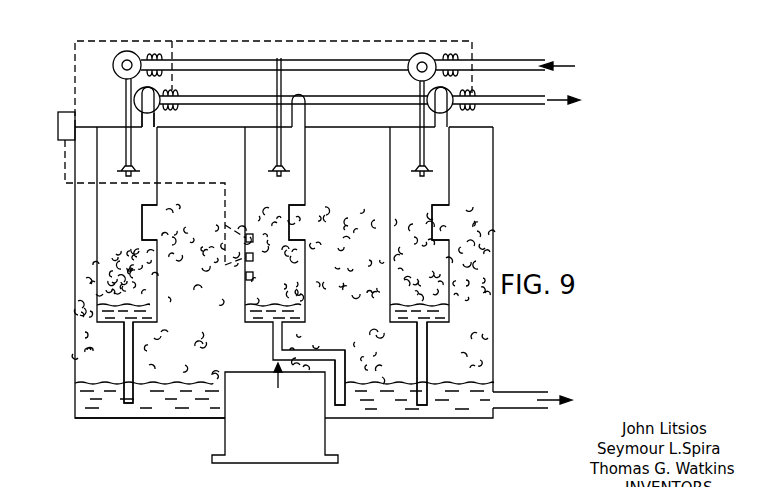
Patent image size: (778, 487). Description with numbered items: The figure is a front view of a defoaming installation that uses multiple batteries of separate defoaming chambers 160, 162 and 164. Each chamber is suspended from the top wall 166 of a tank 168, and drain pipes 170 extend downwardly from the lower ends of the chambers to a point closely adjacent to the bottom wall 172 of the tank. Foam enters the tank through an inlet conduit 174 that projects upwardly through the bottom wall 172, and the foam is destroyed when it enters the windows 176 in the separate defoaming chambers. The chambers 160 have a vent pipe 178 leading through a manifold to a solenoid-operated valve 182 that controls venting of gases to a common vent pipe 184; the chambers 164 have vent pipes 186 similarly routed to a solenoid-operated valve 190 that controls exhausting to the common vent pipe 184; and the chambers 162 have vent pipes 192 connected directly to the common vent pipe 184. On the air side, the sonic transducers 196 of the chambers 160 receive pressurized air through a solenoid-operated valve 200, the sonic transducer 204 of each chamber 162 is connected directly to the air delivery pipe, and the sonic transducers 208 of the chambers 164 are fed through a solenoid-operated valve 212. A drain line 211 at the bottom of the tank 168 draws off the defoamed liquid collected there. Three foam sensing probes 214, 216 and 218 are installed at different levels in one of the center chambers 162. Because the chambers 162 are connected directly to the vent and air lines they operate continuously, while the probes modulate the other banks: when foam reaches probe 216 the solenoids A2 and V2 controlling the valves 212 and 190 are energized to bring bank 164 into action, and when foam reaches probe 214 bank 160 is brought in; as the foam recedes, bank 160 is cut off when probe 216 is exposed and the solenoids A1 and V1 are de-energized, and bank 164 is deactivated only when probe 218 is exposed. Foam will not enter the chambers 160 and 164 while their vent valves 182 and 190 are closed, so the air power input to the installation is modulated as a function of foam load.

The defoaming chambers 160 is at (157, 258).
The defoaming chambers 162 is at (305, 258).
The defoaming chambers 164 is at (449, 258).
The top wall 166 is at (92, 125).
The tank 168 is at (75, 258).
The drain pipes 170 is at (134, 368).
The bottom wall 172 is at (103, 419).
The inlet conduit 174 is at (327, 428).
The windows 176 is at (145, 206).
The vent pipe 178 is at (151, 115).
The solenoid-operated valve 182 is at (136, 95).
The common vent pipe 184 is at (247, 96).
The vent pipes 186 is at (443, 117).
The solenoid-operated valve 190 is at (444, 96).
The vent pipes 192 is at (300, 112).
The sonic transducers 196 is at (140, 171).
The solenoid-operated valve 200 is at (127, 52).
The sonic transducer 204 is at (268, 171).
The sonic transducers 208 is at (410, 171).
The drain line 211 is at (524, 391).
The solenoid-operated valve 212 is at (421, 53).
The foam sensing probe 214 is at (245, 240).
The foam sensing probe 216 is at (245, 258).
The foam sensing probe 218 is at (245, 277).
The solenoid A1 is at (154, 55).
The solenoid A2 is at (457, 55).
The solenoid V1 is at (183, 108).
The solenoid V2 is at (480, 108).